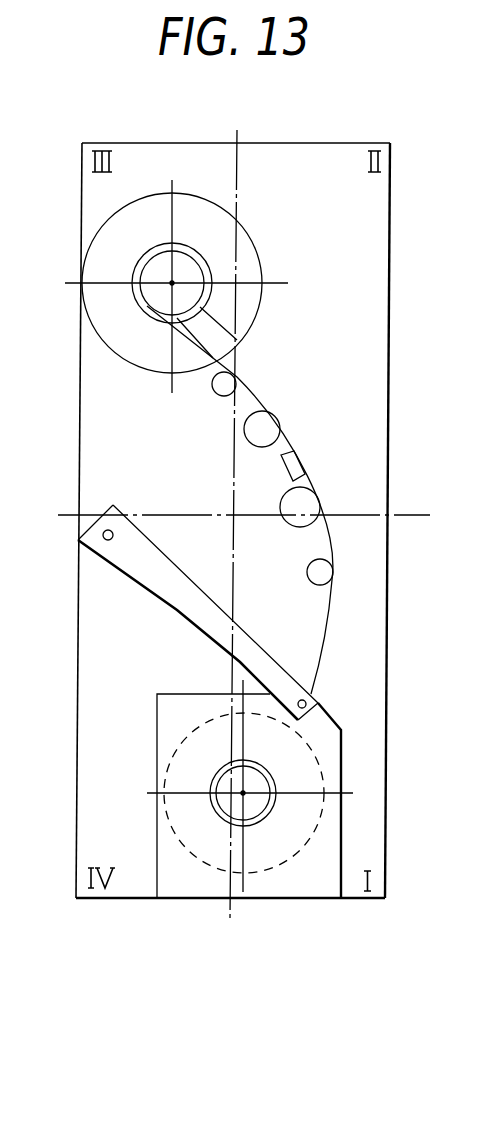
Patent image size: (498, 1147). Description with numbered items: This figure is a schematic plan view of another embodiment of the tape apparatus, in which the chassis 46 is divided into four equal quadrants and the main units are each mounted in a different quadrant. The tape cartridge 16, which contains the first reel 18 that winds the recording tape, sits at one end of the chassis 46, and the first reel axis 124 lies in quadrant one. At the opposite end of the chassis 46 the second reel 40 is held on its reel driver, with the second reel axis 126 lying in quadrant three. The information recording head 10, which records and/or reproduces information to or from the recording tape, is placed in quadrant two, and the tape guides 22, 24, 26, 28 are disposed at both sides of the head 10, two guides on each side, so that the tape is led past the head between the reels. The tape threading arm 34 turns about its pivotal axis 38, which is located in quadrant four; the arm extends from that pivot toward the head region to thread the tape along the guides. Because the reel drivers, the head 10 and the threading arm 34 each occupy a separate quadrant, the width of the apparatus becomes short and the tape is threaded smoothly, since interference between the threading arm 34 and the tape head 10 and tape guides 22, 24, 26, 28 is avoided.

The information recording head 10 is at (303, 463).
The tape cartridge 16 is at (308, 890).
The first reel 18 is at (198, 858).
The tape guide 22 is at (315, 503).
The tape guide 24 is at (327, 572).
The tape guide 26 is at (272, 423).
The tape guide 28 is at (231, 380).
The tape threading arm 34 is at (132, 572).
The pivotal axis 38 is at (78, 541).
The second reel 40 is at (220, 218).
The chassis 46 is at (375, 673).
The first reel axis 124 is at (243, 793).
The second reel axis 126 is at (172, 283).